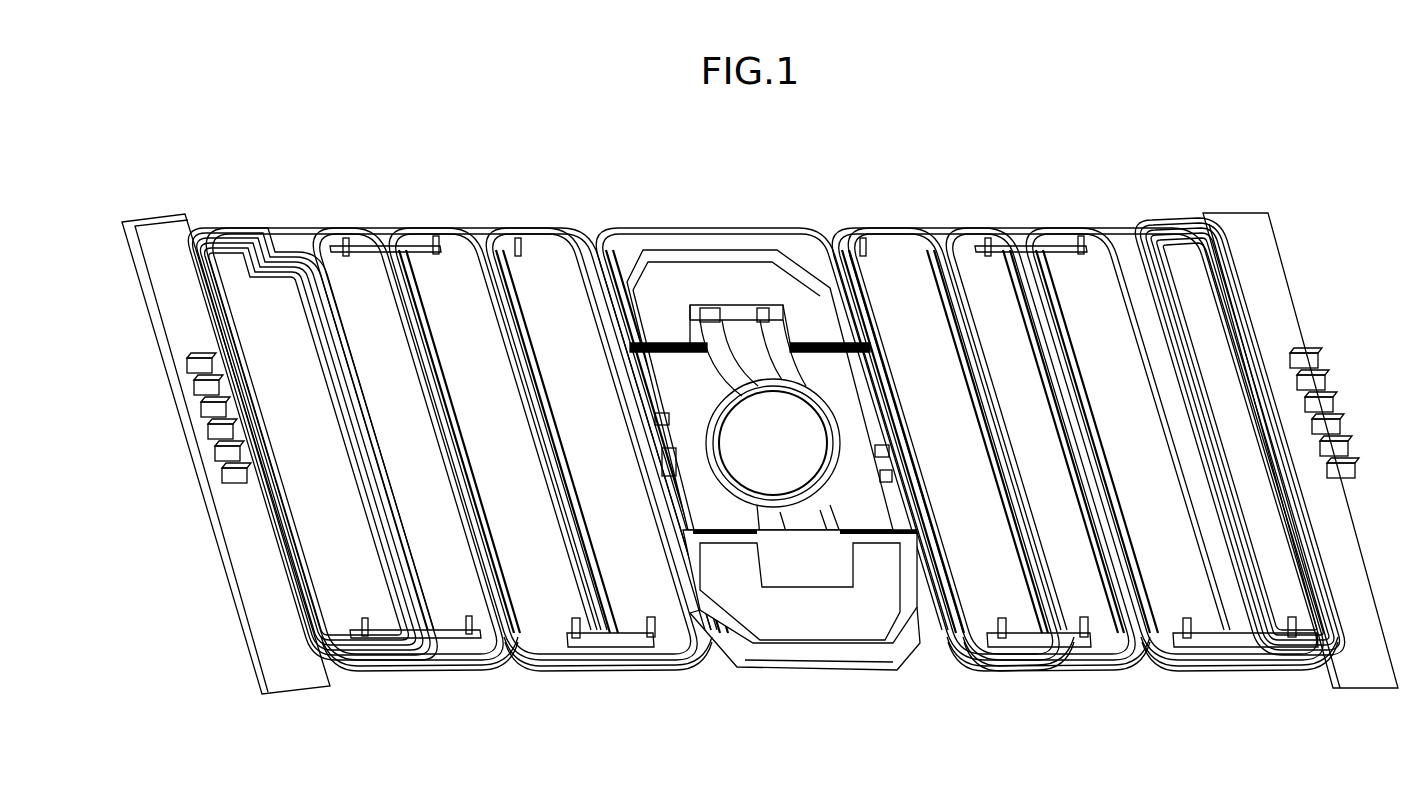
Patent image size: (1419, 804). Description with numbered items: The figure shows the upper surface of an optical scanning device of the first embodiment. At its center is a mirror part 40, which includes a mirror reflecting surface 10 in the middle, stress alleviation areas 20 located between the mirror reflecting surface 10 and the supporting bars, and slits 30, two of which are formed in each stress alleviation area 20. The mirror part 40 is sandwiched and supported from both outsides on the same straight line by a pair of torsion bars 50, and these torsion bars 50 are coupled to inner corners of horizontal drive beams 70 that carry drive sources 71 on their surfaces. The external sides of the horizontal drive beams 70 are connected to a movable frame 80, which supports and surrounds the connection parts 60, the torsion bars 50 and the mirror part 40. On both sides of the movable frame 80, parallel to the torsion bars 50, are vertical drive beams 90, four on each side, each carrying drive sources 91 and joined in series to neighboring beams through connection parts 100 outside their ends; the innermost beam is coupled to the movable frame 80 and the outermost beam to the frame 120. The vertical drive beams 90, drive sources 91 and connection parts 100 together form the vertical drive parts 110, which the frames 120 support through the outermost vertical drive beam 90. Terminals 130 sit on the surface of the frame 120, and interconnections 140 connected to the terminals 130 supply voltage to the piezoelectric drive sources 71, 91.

The mirror reflecting surface 10 is at (835, 385).
The stress alleviation areas 20 is at (768, 378).
The slits 30 is at (787, 445).
The mirror part 40 is at (824, 345).
The torsion bars 50 is at (757, 337).
The connection parts 60 is at (700, 315).
The horizontal drive beams 70 is at (720, 540).
The drive sources 71 is at (665, 378).
The movable frame 80 is at (830, 653).
The vertical drive beams 90 is at (572, 546).
The drive sources 91 is at (534, 612).
The connection parts 100 is at (628, 653).
The vertical drive parts 110 is at (512, 513).
The frames 120 is at (245, 570).
The terminals 130 is at (200, 380).
The interconnections 140 is at (237, 228).